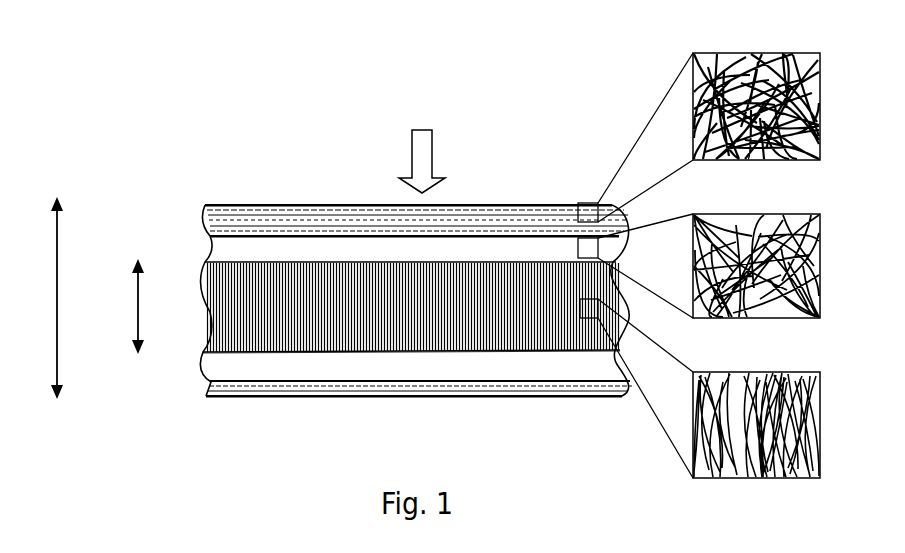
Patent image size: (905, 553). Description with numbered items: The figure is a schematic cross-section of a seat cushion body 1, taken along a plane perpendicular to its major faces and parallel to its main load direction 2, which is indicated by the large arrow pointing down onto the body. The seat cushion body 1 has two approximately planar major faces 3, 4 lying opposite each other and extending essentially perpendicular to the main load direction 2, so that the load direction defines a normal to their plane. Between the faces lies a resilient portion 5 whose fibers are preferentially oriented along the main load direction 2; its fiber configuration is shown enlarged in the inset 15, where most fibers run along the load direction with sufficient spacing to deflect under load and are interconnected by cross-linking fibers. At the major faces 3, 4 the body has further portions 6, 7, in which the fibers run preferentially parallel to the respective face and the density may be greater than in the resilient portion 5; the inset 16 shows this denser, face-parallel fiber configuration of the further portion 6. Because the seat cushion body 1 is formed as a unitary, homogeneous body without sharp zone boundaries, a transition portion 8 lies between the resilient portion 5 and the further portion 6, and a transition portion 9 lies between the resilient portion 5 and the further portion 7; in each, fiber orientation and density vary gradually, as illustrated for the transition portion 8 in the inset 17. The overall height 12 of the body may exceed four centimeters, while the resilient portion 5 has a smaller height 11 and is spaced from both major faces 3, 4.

The seat cushion body 1 is at (147, 136).
The main load direction 2 is at (431, 158).
The major face 3 is at (290, 204).
The major face 4 is at (313, 396).
The resilient portion 5 is at (211, 312).
The further portion 6 is at (213, 212).
The further portion 7 is at (212, 392).
The transition portion 8 is at (213, 245).
The transition portion 9 is at (213, 366).
The height of the resilient portion 11 is at (136, 297).
The height of the seat cushion body 12 is at (56, 297).
The inset 15 is at (820, 372).
The inset 16 is at (820, 53).
The inset 17 is at (820, 215).